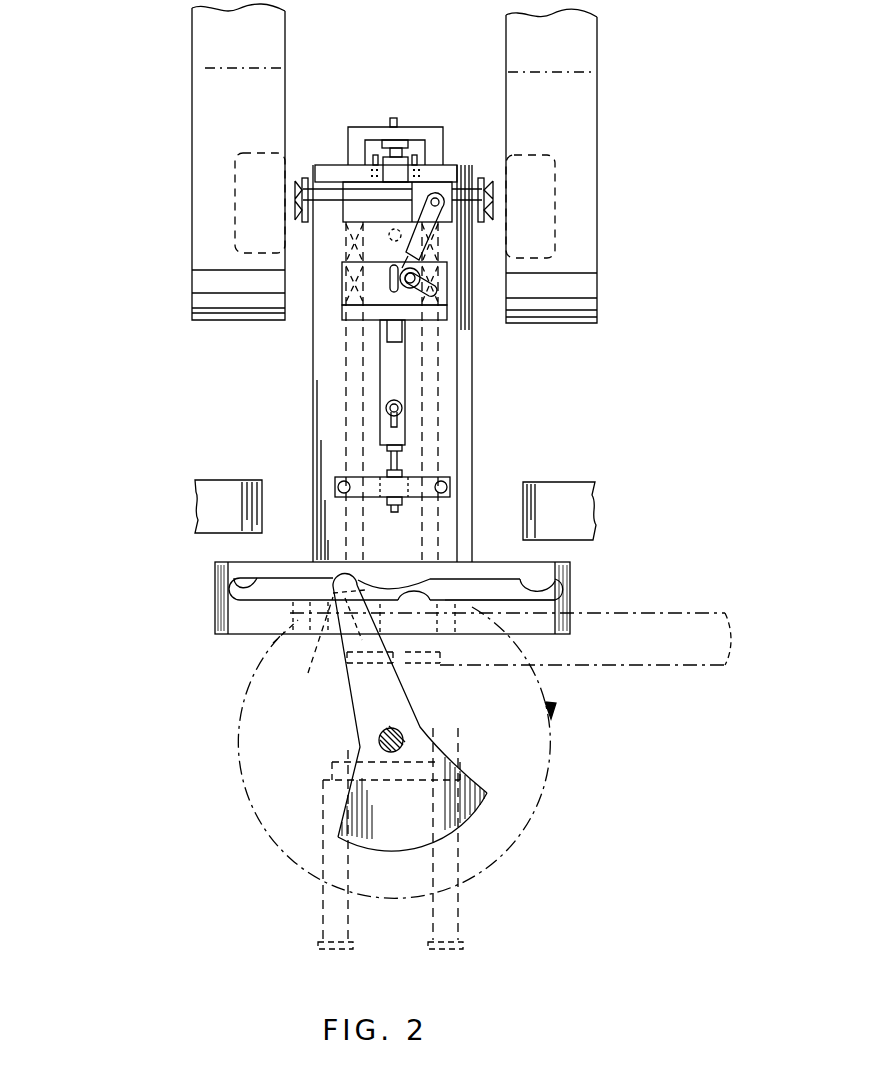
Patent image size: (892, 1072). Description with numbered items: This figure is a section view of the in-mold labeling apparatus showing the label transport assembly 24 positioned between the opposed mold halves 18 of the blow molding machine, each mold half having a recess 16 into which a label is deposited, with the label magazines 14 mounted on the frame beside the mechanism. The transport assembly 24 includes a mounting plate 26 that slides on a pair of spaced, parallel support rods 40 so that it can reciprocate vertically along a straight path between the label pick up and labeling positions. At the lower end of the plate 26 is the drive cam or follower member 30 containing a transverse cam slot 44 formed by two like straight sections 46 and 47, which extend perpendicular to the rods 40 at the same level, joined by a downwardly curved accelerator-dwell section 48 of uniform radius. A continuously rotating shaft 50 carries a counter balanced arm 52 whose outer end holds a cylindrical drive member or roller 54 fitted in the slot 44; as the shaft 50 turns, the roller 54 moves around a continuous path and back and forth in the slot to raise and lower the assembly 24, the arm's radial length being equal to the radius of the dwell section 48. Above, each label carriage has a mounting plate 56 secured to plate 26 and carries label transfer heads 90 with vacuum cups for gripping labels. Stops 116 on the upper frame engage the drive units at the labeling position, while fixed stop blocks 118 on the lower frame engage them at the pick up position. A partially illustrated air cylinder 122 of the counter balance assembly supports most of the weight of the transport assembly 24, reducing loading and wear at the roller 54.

The label magazine 14 is at (213, 478).
The mold recess 16 is at (238, 183).
The mold half 18 is at (197, 233).
The label transport assembly 24 is at (306, 357).
The mounting plate 26 is at (455, 447).
The drive cam 30 is at (214, 610).
The support rod 40 is at (345, 405).
The cam slot 44 is at (540, 608).
The straight section 46 is at (247, 582).
The straight section 47 is at (553, 592).
The accelerator-dwell section 48 is at (425, 597).
The shaft 50 is at (387, 753).
The counter balanced arm 52 is at (397, 713).
The drive member 54 is at (300, 648).
The mounting plate 56 is at (397, 372).
The label transfer head 90 is at (305, 178).
The stop 116 is at (397, 168).
The fixed stop block 118 is at (385, 638).
The air cylinder 122 is at (673, 612).